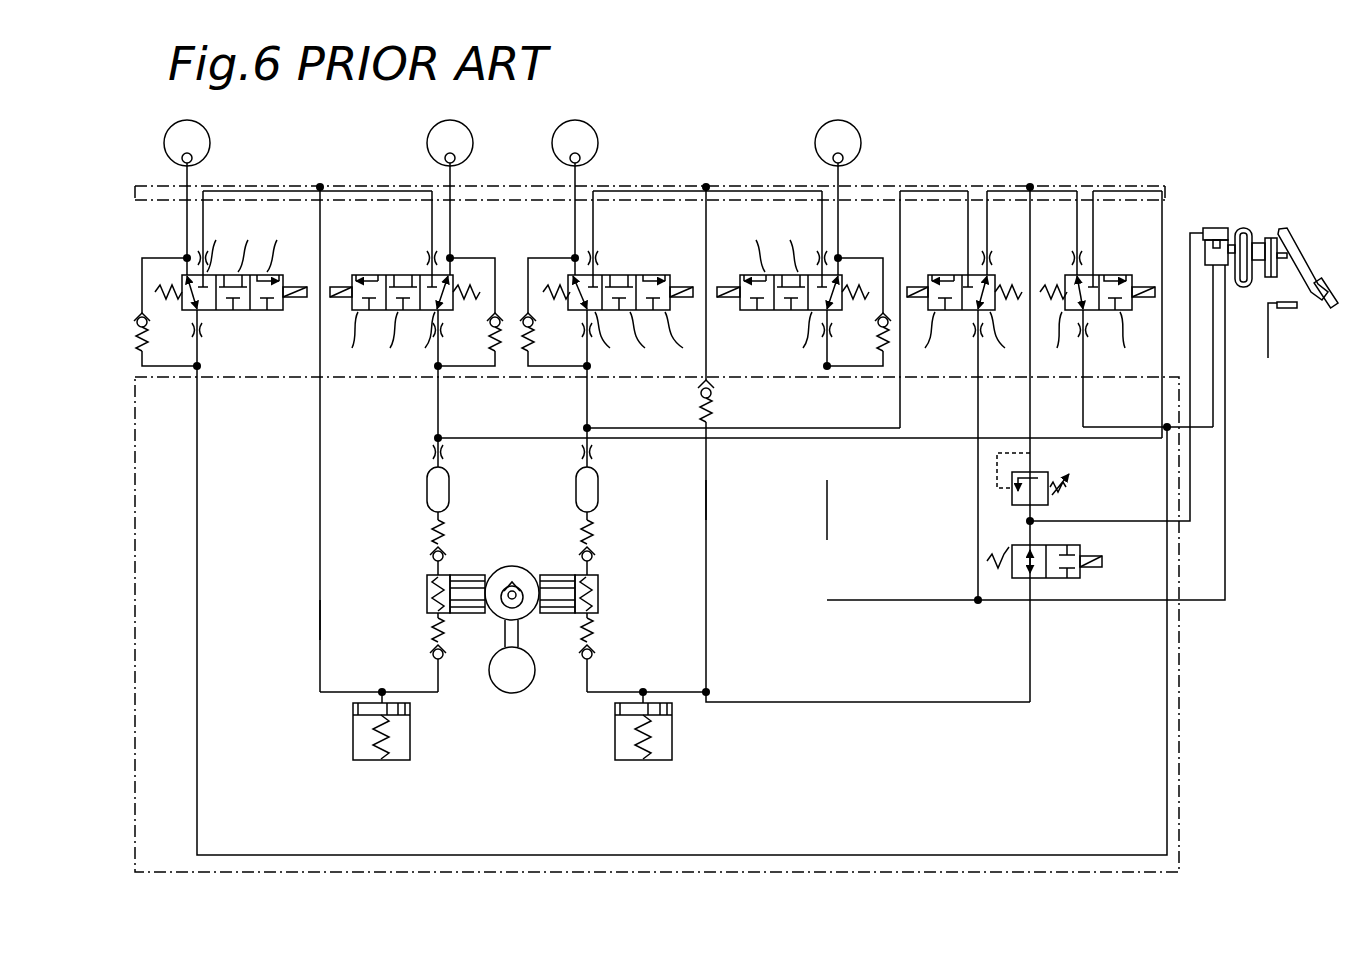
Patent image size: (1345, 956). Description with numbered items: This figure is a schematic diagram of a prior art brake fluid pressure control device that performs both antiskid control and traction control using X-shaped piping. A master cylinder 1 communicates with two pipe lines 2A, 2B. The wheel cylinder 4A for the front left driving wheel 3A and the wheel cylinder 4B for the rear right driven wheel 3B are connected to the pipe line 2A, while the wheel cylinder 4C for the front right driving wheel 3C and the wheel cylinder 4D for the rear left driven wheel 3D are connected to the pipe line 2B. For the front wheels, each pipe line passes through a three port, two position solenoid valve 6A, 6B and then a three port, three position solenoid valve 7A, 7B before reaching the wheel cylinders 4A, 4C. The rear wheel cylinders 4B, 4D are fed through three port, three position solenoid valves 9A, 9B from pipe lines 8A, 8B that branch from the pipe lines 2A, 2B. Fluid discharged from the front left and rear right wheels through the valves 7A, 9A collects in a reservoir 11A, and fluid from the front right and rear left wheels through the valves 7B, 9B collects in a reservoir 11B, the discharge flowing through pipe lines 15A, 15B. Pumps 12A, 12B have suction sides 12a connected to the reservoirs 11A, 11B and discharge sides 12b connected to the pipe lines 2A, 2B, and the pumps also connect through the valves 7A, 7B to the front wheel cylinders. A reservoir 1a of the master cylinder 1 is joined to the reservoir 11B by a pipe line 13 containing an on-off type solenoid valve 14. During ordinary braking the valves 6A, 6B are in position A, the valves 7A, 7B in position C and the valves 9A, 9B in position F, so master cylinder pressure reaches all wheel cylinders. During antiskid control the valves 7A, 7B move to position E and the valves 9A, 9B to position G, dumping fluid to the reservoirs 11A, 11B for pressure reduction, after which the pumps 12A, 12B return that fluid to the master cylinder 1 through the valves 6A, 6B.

The master cylinder 1 is at (1240, 230).
The reservoir of the master cylinder 1a is at (1220, 227).
The pipe line 2A is at (1213, 395).
The pipe line 2B is at (1226, 513).
The front left driving wheel 3A is at (474, 144).
The rear right driven wheel 3B is at (212, 144).
The front right driving wheel 3C is at (599, 144).
The rear left driven wheel 3D is at (862, 144).
The wheel cylinder 4A is at (456, 160).
The wheel cylinder 4B is at (193, 160).
The wheel cylinder 4C is at (581, 160).
The wheel cylinder 4D is at (844, 160).
The three port connection and two position solenoid valve 6A is at (1118, 272).
The three port connection and two position solenoid valve 6B is at (953, 272).
The three port connection and three position solenoid valve 7A is at (378, 272).
The three port connection and three position solenoid valve 7B is at (633, 272).
The pipe line 8A is at (1167, 480).
The pipe line 8B is at (829, 515).
The three port connection and three position solenoid valve 9A is at (260, 324).
The three port connection and three position solenoid valve 9B is at (777, 327).
The reservoir 11A is at (412, 738).
The reservoir 11B is at (615, 738).
The pump 12A is at (427, 587).
The pump 12B is at (598, 575).
The suction side 12a is at (598, 613).
The discharge side 12b is at (592, 573).
The pipe line 13 is at (1190, 252).
The on-off type solenoid valve 14 is at (1077, 545).
The pipe line 15A is at (320, 540).
The pipe line 15B is at (707, 505).